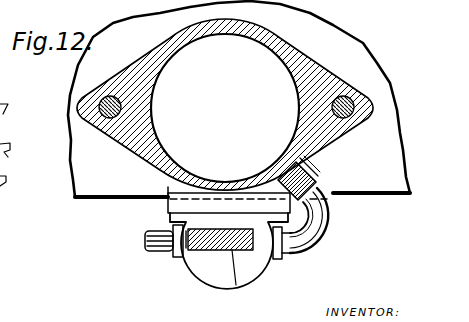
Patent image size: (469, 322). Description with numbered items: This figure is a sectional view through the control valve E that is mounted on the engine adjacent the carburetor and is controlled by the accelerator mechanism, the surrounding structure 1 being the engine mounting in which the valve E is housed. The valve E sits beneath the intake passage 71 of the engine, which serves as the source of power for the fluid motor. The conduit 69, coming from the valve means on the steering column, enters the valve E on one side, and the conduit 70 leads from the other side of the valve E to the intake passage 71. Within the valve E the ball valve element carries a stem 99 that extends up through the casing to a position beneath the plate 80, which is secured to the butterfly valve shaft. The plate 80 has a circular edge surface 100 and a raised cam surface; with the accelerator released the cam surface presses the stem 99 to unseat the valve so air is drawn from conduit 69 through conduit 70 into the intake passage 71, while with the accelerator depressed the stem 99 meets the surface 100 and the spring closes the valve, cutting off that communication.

The housing 1 is at (0, 279).
The intake passage 71 is at (142, 160).
The conduit 69 is at (143, 241).
The conduit 70 is at (325, 217).
The plate 80 is at (213, 250).
The stem 99 is at (236, 285).
The circular edge surface 100 is at (187, 236).
The control valve E is at (268, 267).